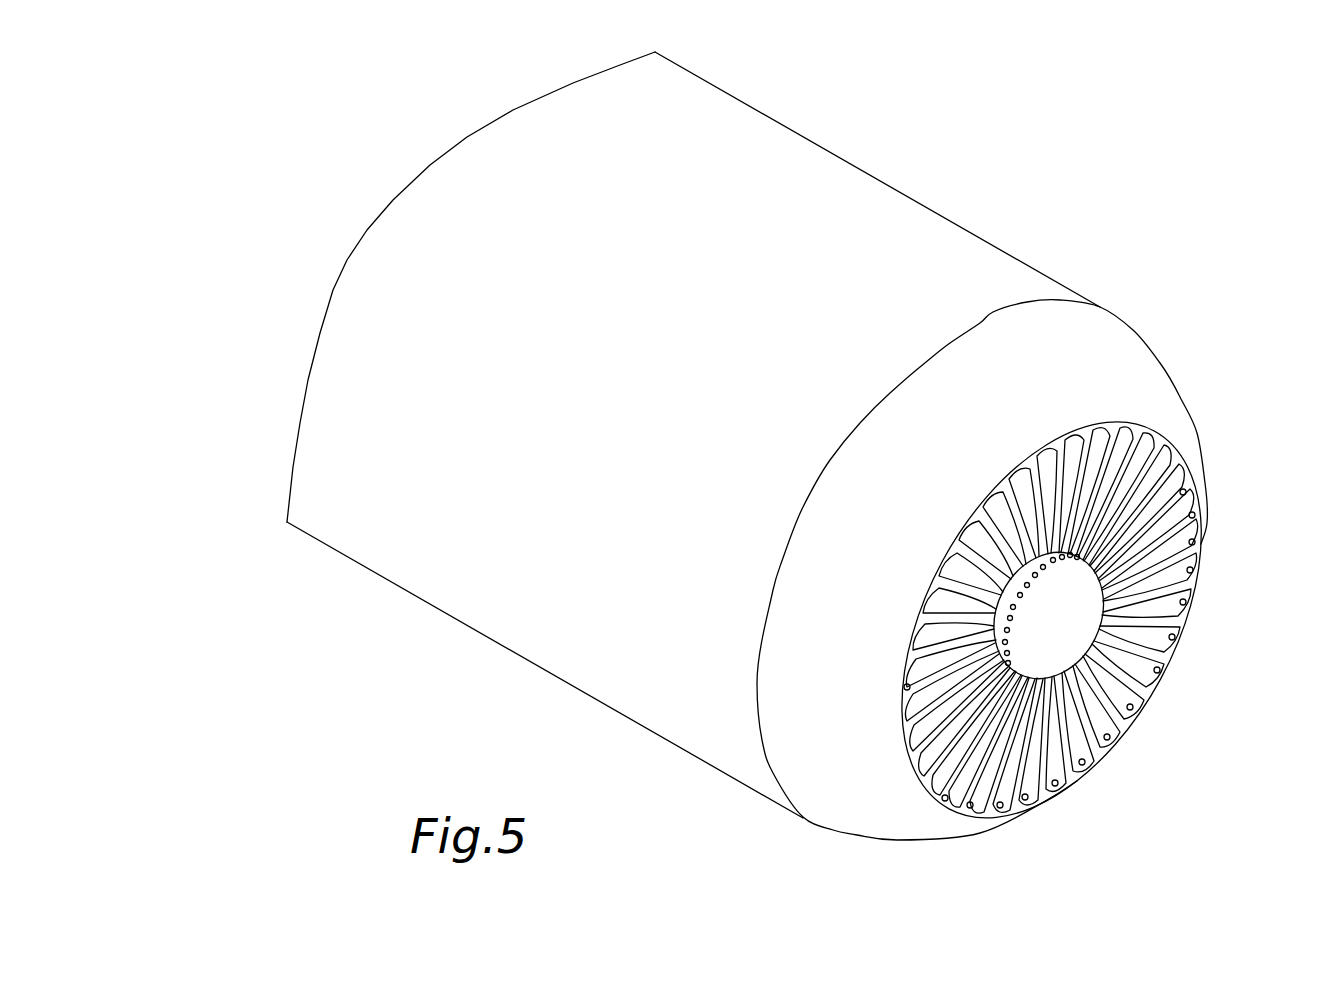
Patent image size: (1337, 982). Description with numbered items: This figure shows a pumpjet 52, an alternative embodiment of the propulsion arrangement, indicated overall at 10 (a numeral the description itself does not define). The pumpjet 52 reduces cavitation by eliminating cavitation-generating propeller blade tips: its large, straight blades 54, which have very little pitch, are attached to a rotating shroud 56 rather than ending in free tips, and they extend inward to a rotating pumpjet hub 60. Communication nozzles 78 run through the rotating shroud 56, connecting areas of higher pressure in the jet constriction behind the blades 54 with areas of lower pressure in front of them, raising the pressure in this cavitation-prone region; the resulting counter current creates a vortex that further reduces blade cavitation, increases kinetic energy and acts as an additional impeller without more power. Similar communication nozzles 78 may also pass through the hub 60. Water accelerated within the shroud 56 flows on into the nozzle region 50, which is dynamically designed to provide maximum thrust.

The turbofan engine 10 is at (994, 156).
The nozzle region 50 is at (758, 757).
The pumpjet 52 is at (1202, 419).
The blades 54 is at (1163, 623).
The rotating shroud 56 is at (1122, 368).
The rotating pumpjet hub 60 is at (1100, 728).
The communication nozzles 78 is at (1193, 568).